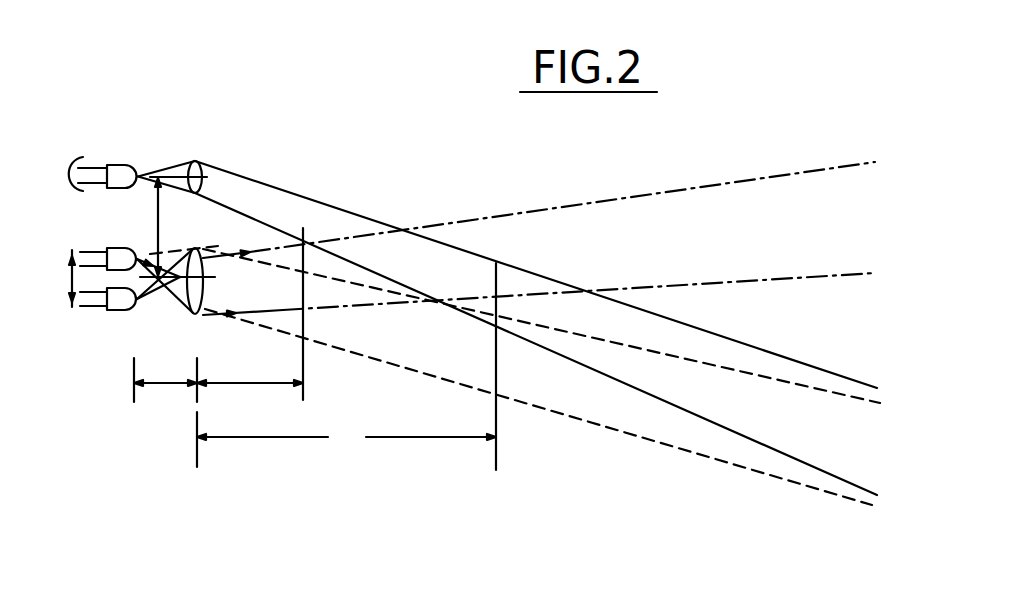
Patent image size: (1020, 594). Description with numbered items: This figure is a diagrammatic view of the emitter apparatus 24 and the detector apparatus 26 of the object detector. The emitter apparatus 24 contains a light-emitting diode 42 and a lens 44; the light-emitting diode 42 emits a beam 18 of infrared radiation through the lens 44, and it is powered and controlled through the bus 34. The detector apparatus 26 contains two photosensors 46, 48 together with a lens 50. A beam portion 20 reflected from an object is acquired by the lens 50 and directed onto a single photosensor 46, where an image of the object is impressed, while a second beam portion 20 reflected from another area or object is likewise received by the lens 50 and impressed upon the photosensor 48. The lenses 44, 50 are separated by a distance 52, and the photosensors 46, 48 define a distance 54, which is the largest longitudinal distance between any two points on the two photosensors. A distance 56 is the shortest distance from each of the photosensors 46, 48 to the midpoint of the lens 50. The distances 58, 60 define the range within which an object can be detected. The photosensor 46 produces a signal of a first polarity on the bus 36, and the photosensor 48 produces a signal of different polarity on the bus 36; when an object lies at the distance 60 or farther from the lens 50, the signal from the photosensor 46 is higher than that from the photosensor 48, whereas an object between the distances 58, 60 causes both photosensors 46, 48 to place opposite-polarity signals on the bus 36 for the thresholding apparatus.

The beam 18 is at (267, 230).
The beam portion 20 is at (705, 190).
The emitter apparatus 24 is at (158, 135).
The detector apparatus 26 is at (147, 322).
The bus 34 is at (87, 158).
The bus 36 is at (97, 308).
The light-emitting diode 42 is at (117, 166).
The lens 44 is at (205, 178).
The photosensor 46 is at (122, 248).
The photosensor 48 is at (119, 318).
The lens 50 is at (214, 294).
The distance 52 is at (154, 227).
The distance 54 is at (66, 282).
The distance 56 is at (167, 386).
The distance 58 is at (245, 382).
The distance 60 is at (346, 366).